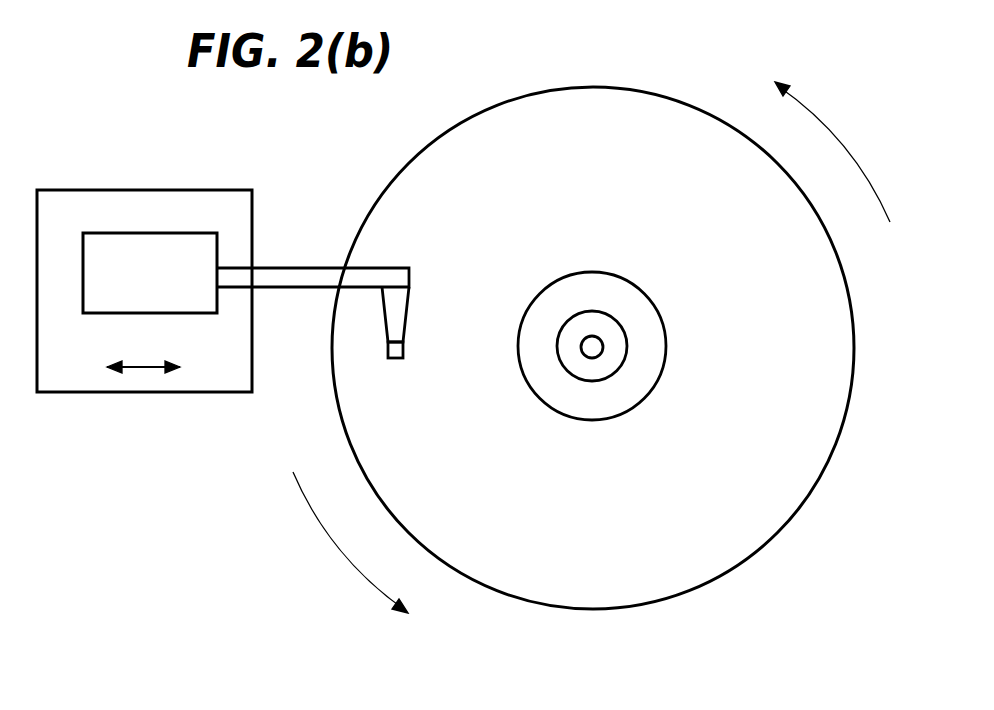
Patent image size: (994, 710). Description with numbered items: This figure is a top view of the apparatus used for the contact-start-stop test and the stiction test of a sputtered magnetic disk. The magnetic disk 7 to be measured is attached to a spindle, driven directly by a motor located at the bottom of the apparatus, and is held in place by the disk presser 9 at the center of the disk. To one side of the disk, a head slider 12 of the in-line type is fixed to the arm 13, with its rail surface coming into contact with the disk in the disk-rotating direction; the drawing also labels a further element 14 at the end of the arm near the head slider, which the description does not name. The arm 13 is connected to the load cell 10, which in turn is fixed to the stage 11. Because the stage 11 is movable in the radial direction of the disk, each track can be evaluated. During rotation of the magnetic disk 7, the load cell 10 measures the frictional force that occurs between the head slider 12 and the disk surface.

The magnetic disk 7 is at (657, 102).
The disk presser 9 is at (600, 368).
The load cell 10 is at (147, 250).
The stage 11 is at (87, 377).
The head slider 12 is at (387, 350).
The arm 13 is at (320, 268).
The slider 14 is at (383, 312).